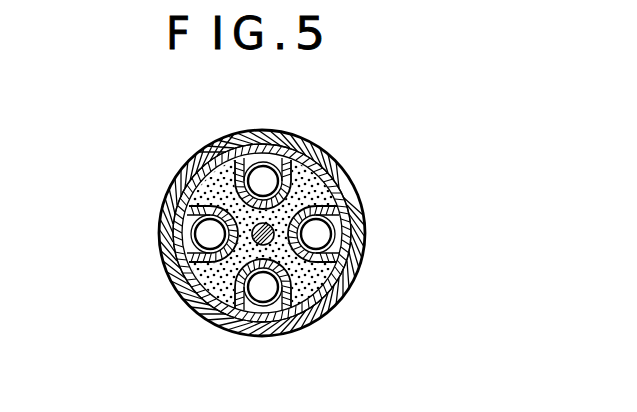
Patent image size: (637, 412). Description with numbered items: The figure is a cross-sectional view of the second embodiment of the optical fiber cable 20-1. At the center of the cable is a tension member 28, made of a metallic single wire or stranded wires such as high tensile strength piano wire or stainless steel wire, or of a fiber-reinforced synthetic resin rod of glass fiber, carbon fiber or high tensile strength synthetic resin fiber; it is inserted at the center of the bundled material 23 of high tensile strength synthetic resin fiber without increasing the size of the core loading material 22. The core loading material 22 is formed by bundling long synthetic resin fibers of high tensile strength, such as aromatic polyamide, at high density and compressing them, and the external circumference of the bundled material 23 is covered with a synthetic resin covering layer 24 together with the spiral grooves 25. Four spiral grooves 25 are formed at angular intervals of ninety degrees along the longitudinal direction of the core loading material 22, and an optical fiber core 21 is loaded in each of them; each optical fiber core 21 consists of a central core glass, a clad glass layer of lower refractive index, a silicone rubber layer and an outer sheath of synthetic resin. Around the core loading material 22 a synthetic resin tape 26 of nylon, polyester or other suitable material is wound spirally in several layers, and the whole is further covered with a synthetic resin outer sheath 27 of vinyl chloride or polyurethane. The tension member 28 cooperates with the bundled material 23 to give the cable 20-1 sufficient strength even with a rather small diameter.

The optical fiber cable 20-1 is at (277, 117).
The optical fiber core 21 is at (255, 290).
The core loading material 22 is at (310, 263).
The bundled material 23 is at (305, 182).
The synthetic resin covering layer 24 is at (352, 244).
The spiral grooves 25 is at (232, 127).
The synthetic resin tape 26 is at (167, 225).
The synthetic resin outer sheath 27 is at (172, 178).
The tension member 28 is at (264, 220).